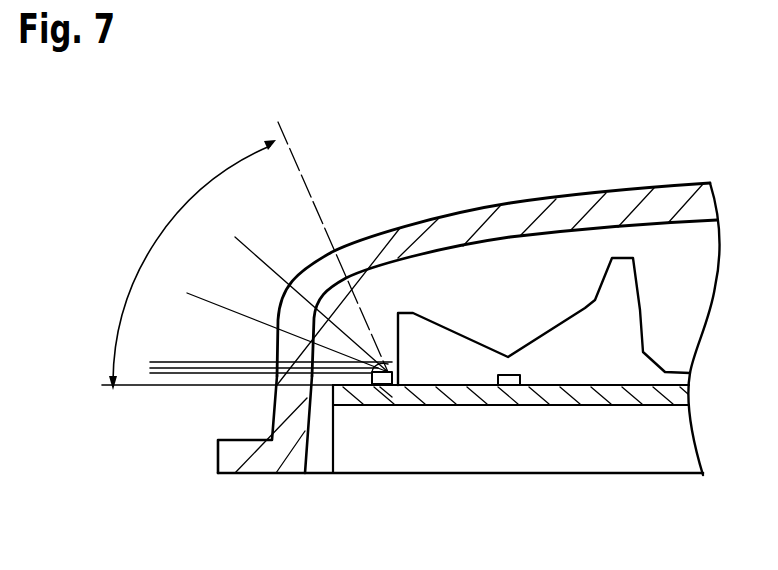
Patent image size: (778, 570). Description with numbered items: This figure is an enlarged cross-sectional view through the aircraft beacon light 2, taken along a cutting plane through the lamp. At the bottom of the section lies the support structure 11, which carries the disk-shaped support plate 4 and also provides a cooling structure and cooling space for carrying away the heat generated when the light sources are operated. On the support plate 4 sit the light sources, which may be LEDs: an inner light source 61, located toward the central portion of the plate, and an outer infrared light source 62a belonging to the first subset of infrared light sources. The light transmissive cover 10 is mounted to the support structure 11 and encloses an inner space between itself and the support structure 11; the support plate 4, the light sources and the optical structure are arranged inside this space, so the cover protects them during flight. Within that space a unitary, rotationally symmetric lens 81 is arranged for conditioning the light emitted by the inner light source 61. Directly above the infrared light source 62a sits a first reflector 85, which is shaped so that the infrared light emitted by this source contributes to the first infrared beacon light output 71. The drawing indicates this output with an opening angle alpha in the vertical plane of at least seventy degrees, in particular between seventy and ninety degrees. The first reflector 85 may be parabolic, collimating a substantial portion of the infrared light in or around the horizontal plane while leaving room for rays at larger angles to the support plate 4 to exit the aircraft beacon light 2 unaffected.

The aircraft beacon light 2 is at (555, 126).
The support plate 4 is at (675, 398).
The light transmissive cover 10 is at (622, 206).
The support structure 11 is at (602, 455).
The inner light source 61 is at (513, 387).
The infrared light source of the first subset 62a is at (389, 392).
The first infrared beacon light output 71 is at (236, 137).
The lens 81 is at (540, 312).
The first reflector 85 is at (385, 364).